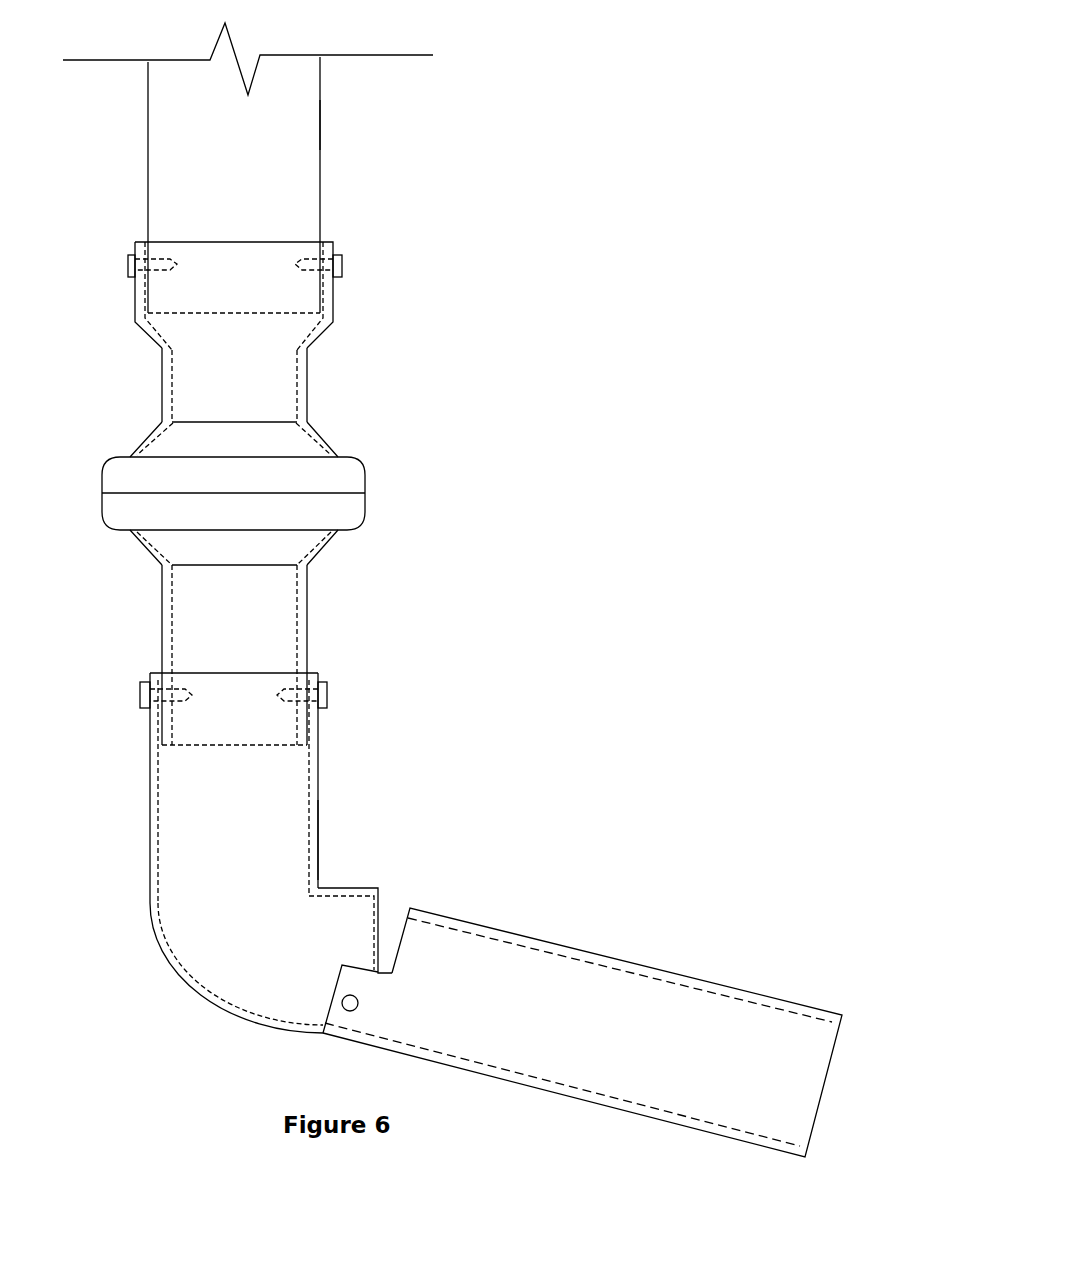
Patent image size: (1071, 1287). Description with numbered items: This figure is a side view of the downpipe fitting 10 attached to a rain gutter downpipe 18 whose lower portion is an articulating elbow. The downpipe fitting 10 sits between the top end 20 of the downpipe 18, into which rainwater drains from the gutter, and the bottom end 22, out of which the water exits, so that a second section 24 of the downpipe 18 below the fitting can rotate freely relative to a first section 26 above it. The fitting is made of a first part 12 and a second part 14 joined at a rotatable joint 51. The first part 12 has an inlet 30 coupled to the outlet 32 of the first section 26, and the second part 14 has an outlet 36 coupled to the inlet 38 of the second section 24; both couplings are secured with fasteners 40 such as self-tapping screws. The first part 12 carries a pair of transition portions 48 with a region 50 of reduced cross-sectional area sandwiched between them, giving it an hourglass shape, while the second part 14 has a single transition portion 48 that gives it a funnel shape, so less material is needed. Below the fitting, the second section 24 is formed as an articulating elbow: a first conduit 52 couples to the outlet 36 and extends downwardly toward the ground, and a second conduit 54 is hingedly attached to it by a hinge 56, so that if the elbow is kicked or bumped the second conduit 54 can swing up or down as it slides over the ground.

The downpipe fitting 10 is at (392, 345).
The first part 12 is at (167, 380).
The second part 14 is at (306, 600).
The downpipe 18 is at (318, 122).
The top end 20 is at (280, 58).
The bottom end 22 is at (832, 1062).
The second section 24 is at (256, 905).
The first section 26 is at (241, 166).
The inlet 30 is at (205, 243).
The outlet 32 is at (207, 318).
The outlet 36 is at (232, 747).
The inlet 38 is at (220, 672).
The fasteners 40 is at (130, 263).
The transition portions 48 is at (148, 336).
The region 50 is at (305, 387).
The rotatable joint 51 is at (366, 489).
The first conduit 52 is at (155, 833).
The second conduit 54 is at (570, 950).
The hinge 56 is at (350, 1012).